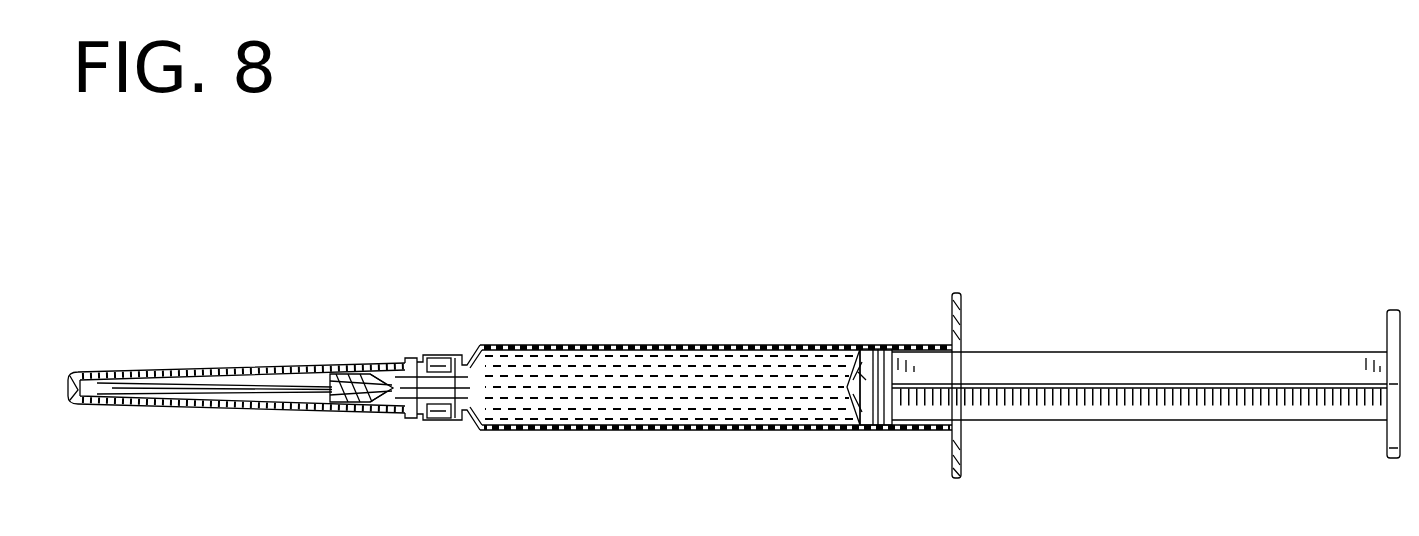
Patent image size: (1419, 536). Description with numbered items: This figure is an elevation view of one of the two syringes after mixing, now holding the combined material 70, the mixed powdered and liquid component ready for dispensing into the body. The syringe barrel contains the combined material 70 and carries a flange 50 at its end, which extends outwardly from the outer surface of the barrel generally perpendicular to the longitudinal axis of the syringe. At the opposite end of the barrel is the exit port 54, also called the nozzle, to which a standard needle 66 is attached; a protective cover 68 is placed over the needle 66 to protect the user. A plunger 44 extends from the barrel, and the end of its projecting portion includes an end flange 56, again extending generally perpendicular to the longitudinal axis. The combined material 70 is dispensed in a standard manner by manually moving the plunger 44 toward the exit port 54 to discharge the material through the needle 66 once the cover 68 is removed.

The plunger 44 is at (847, 390).
The flange 50 is at (957, 293).
The exit port 54 is at (428, 385).
The end flange 56 is at (1382, 310).
The standard needle 66 is at (305, 392).
The protective cover 68 is at (157, 371).
The combined material 70 is at (664, 376).